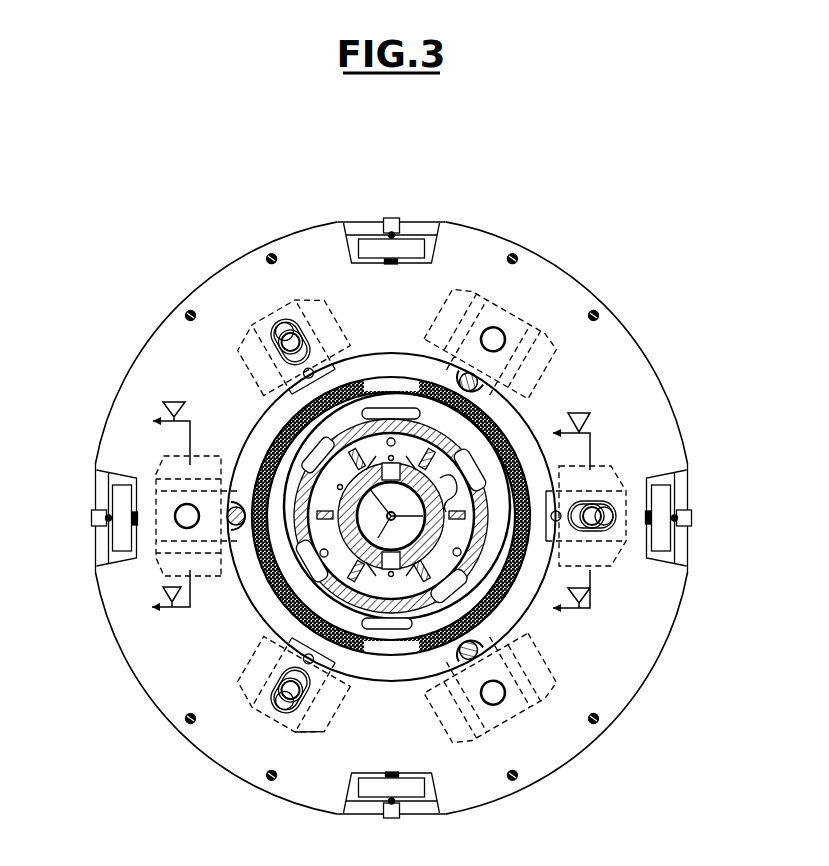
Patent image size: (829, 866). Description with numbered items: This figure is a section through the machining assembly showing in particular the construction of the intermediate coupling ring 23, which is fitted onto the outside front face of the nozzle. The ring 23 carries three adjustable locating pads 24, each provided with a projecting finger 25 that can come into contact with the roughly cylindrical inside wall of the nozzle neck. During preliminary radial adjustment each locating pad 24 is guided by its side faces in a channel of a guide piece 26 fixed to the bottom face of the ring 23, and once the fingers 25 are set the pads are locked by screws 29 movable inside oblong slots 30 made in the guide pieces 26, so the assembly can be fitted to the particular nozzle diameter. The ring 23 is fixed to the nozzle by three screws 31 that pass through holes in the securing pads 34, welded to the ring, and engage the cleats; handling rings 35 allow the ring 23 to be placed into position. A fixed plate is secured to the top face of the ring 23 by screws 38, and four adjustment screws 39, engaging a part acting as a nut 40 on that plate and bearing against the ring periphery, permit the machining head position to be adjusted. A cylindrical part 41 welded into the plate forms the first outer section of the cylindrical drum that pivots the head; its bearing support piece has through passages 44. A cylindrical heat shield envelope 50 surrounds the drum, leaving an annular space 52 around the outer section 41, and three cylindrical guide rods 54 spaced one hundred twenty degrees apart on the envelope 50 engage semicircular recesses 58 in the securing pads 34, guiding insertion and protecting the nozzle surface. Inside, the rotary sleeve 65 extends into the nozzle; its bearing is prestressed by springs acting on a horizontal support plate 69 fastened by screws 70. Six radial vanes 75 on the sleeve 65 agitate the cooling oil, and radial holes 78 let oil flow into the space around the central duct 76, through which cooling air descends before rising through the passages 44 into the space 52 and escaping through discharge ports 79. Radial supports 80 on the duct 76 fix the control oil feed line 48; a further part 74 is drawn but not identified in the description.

The intermediate coupling ring 23 is at (166, 357).
The adjustable locating pad 24 is at (325, 323).
The projecting finger 25 is at (336, 342).
The guide piece 26 is at (244, 699).
The screw 29 is at (297, 360).
The oblong slot 30 is at (286, 336).
The screw 31 is at (495, 338).
The securing pad 34 is at (440, 354).
The handling ring 35 is at (433, 226).
The screw 38 is at (266, 257).
The adjustment screw 39 is at (392, 217).
The nut 40 is at (372, 250).
The cylindrical part 41 is at (316, 514).
The through passage 44 is at (326, 458).
The control oil feed line 48 is at (391, 516).
The cylindrical heat shield envelope 50 is at (290, 420).
The annular space 52 is at (392, 631).
The cylindrical guide rod 54 is at (476, 388).
The semicircular recess 58 is at (447, 357).
The rotary sleeve 65 is at (365, 445).
The horizontal support plate 69 is at (430, 590).
The screw 70 is at (391, 439).
The lever 74 is at (462, 479).
The radial vane 75 is at (302, 553).
The central duct 76 is at (400, 566).
The radial hole 78 is at (400, 466).
The discharge port 79 is at (252, 590).
The radial support 80 is at (390, 516).